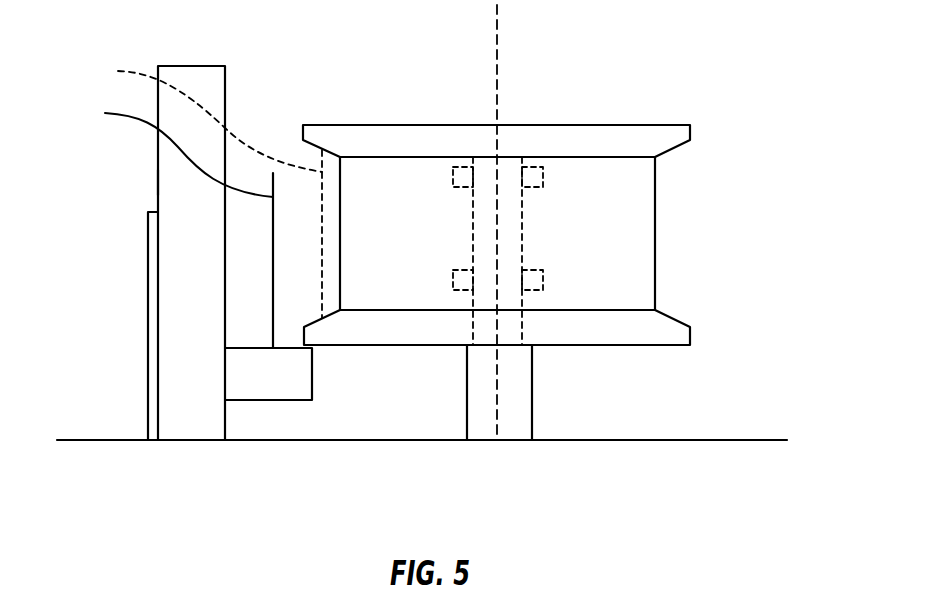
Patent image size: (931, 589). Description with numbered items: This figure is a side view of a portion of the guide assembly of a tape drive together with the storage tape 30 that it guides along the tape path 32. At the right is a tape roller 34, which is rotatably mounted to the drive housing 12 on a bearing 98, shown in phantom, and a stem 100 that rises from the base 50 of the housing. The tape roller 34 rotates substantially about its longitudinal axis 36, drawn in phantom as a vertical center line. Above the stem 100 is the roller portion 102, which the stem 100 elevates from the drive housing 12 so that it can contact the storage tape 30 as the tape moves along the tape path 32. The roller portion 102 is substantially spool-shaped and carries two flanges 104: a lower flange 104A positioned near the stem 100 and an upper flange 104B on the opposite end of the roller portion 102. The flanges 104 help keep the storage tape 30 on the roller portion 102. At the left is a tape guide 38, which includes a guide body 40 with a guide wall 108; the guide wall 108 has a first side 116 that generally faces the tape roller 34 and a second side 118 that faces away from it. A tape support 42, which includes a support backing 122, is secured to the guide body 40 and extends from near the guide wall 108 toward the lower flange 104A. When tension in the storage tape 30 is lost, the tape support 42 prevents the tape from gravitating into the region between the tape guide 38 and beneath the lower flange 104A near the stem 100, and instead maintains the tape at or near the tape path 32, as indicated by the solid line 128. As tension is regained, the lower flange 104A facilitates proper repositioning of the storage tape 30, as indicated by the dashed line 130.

The drive housing 12 is at (407, 460).
The base 50 is at (120, 441).
The guide body 40 is at (235, 235).
The guide wall 108 is at (192, 66).
The storage tape 30 is at (172, 128).
The dashed line 130 is at (179, 115).
The solid line 128 is at (147, 149).
The second side 118 is at (158, 181).
The first side 116 is at (226, 108).
The tape guide 38 is at (100, 326).
The support backing 122 is at (148, 342).
The tape support 42 is at (314, 372).
The tape path 32 is at (298, 287).
The longitudinal axis 36 is at (499, 50).
The tape roller 34 is at (553, 220).
The flange 104 is at (553, 233).
The upper flange 104B is at (653, 133).
The lower flange 104A is at (653, 333).
The roller portion 102 is at (655, 232).
The bearing 98 is at (465, 167).
The stem 100 is at (532, 399).